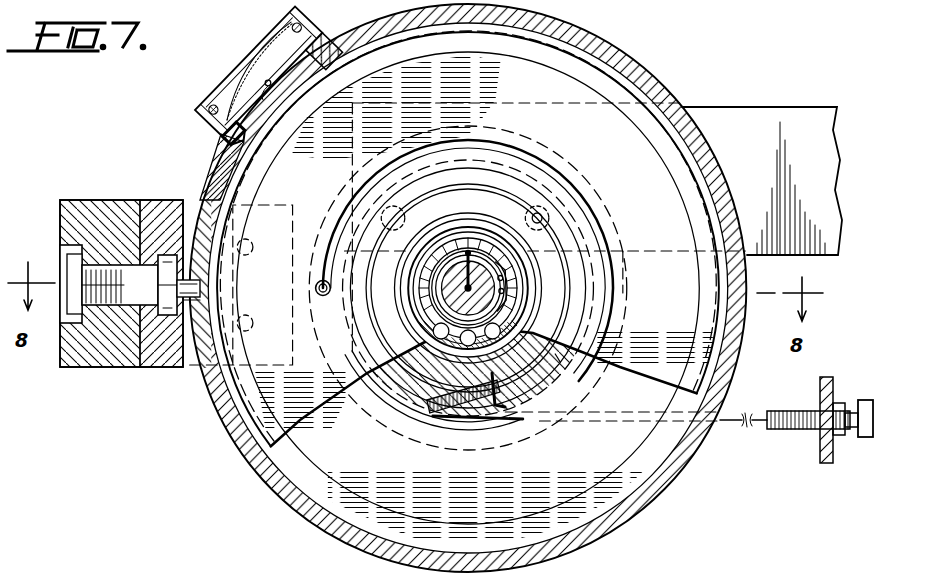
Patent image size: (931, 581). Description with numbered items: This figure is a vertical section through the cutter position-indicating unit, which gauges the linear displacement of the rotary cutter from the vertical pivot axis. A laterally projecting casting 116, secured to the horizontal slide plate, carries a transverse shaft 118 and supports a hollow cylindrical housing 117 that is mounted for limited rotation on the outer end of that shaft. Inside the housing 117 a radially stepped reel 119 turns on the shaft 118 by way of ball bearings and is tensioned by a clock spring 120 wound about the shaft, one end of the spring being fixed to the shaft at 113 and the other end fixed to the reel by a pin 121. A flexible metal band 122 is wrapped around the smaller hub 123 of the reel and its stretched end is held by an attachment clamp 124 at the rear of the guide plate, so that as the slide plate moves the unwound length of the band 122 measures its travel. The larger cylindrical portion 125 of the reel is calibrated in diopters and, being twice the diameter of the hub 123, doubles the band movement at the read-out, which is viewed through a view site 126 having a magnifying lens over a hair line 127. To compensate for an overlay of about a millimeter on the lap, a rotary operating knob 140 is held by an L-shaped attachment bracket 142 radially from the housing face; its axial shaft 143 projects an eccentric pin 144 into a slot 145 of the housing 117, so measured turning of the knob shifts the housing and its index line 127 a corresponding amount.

The fixed end of clock spring 113 is at (468, 253).
The laterally projecting block or casting 116 is at (547, 372).
The hollow cylindrical housing 117 is at (649, 494).
The transverse shaft 118 is at (468, 253).
The radially stepped reel 119 is at (689, 315).
The clock spring 120 is at (611, 277).
The pin 121 is at (313, 290).
The flexible longitudinal band 122 is at (724, 425).
The hub of the reel 123 is at (396, 390).
The attachment clamp 124 is at (810, 402).
The larger cylindrical portion of the reel 125 is at (243, 170).
The view site 126 is at (200, 115).
The hair line 127 is at (270, 97).
The rotary operating knob 140 is at (173, 286).
The L-shaped attachment bracket 142 is at (157, 200).
The axial shaft of the knob 143 is at (160, 287).
The eccentric pin 144 is at (200, 289).
The slot 145 is at (196, 300).